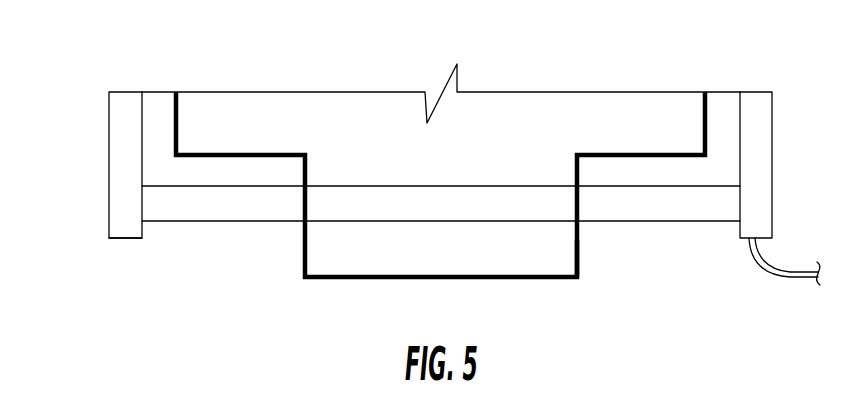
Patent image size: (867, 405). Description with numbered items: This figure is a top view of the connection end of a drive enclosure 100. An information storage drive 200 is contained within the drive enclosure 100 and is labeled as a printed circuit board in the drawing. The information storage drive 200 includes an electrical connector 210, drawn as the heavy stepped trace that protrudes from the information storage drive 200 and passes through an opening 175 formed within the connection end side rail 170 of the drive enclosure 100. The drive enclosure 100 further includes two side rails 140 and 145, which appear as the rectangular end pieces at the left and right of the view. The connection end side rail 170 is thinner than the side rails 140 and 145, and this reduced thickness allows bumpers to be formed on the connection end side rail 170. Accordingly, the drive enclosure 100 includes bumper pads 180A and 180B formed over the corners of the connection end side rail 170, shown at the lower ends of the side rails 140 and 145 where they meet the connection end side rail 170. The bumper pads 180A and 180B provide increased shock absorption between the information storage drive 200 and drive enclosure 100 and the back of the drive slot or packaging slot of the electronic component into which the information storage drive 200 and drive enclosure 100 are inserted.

The drive enclosure 100 is at (429, 206).
The side rail 140 is at (118, 118).
The side rail 145 is at (753, 100).
The connection end side rail 170 is at (242, 221).
The opening 175 is at (601, 255).
The bumper pad 180A is at (122, 230).
The bumper pad 180B is at (743, 240).
The information storage drive 200 is at (303, 123).
The electrical connector 210 is at (387, 265).